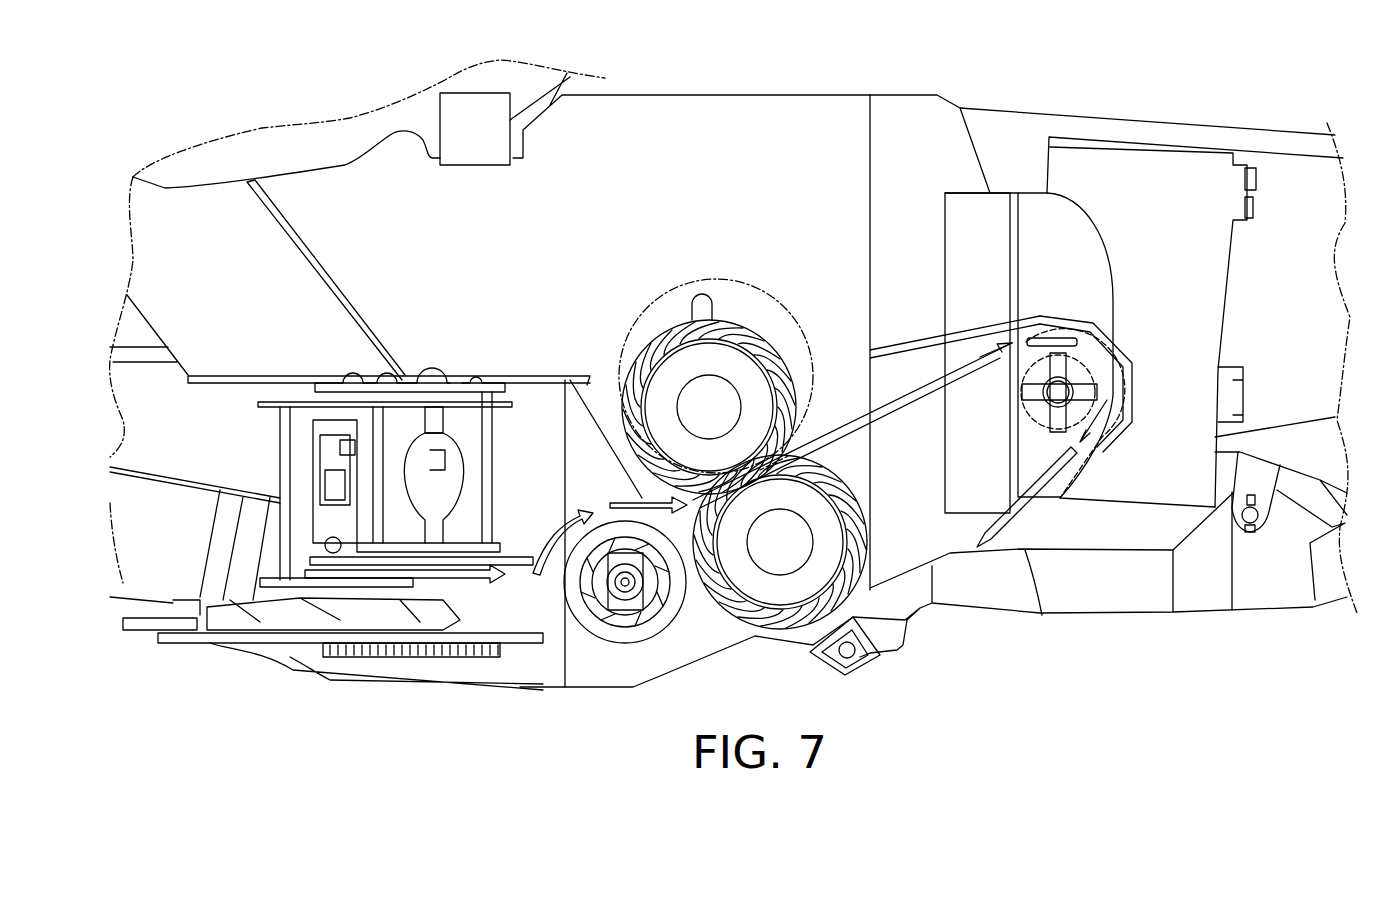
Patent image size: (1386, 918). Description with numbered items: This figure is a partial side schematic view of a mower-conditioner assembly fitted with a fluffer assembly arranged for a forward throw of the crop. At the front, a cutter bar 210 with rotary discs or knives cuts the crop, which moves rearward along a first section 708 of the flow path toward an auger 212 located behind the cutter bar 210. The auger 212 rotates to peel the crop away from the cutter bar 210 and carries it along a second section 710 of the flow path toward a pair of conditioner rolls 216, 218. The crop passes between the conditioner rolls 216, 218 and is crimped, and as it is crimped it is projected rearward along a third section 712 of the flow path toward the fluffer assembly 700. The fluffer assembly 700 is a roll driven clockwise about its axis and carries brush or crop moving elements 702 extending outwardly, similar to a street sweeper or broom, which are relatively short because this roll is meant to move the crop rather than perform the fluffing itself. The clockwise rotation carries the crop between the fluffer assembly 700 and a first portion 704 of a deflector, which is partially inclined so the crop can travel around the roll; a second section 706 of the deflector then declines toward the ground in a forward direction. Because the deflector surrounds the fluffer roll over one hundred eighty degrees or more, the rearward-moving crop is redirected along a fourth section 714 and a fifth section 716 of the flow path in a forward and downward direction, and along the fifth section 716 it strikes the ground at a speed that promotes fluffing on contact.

The cutter bar 210 is at (353, 690).
The auger 212 is at (663, 610).
The conditioner roll 216 is at (683, 367).
The conditioner roll 218 is at (823, 530).
The fluffer assembly 700 is at (1020, 419).
The brush or crop moving elements 702 is at (1095, 392).
The first portion of deflector 704 is at (920, 340).
The second section of deflector 706 is at (1123, 430).
The first section of flow path 708 is at (453, 580).
The second section of flow path 710 is at (640, 498).
The third section of flow path 712 is at (848, 417).
The fourth section of flow path 714 is at (1078, 338).
The fifth section of flow path 716 is at (1033, 493).